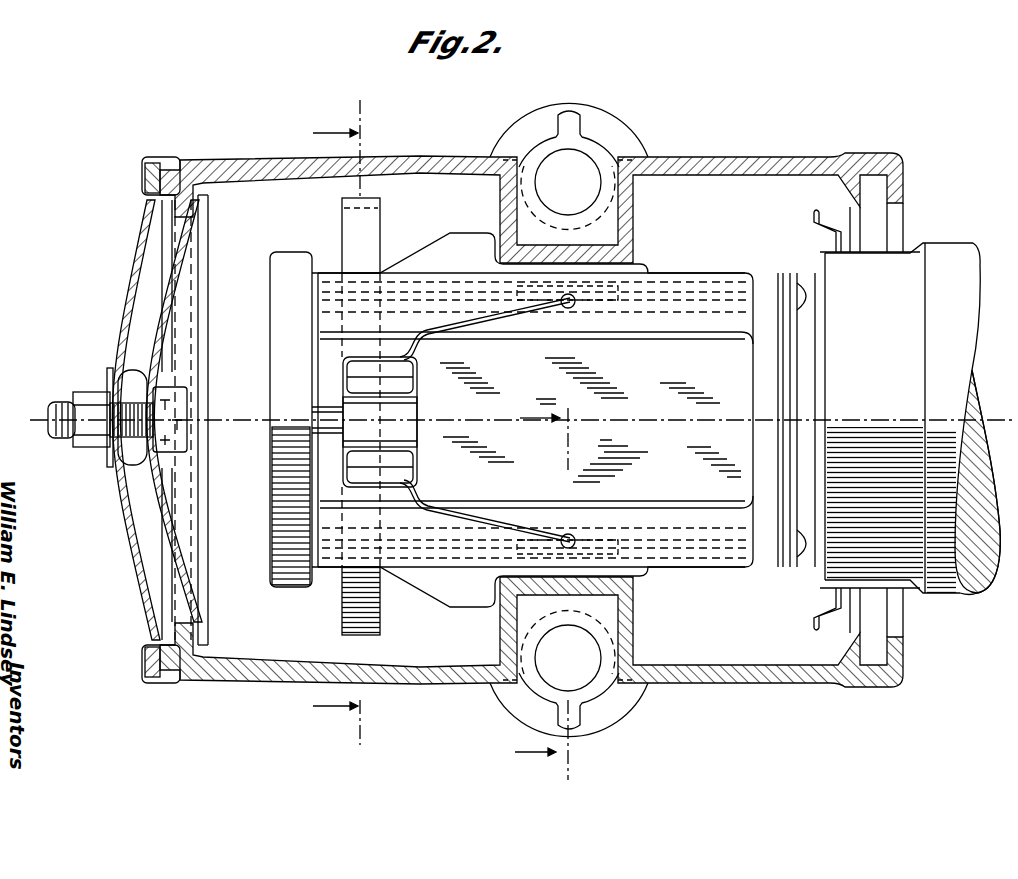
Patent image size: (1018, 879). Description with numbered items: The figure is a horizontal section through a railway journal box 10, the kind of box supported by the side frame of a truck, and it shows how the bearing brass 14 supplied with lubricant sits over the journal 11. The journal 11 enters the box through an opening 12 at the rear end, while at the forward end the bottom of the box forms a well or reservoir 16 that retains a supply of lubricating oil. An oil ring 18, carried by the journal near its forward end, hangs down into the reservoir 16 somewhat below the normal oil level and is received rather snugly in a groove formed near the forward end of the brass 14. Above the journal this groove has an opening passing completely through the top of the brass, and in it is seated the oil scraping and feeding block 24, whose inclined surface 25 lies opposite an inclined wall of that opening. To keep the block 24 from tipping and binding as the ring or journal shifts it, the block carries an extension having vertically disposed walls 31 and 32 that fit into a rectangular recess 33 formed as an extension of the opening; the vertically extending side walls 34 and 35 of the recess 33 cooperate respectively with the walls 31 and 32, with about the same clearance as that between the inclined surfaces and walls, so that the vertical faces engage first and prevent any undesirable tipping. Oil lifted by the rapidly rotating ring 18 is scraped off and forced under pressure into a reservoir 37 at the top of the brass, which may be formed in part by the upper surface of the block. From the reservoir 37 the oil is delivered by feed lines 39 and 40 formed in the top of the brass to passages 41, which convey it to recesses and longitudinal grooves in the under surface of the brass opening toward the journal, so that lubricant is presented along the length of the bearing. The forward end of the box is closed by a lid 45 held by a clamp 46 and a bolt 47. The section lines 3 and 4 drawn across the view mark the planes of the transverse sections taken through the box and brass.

The section line 3- 3 is at (336, 422).
The section line 4- 4 is at (541, 587).
The journal box 10 is at (697, 167).
The journal 11 is at (288, 388).
The opening 12 is at (893, 220).
The brass 14 is at (327, 348).
The well or reservoir 16 is at (233, 645).
The oil ring 18 is at (342, 216).
The oil scraping and feeding block 24 is at (352, 436).
The inclined surface 25 is at (348, 402).
The vertically disposed wall 31 is at (397, 415).
The vertically disposed wall 32 is at (384, 450).
The rectangular recess 33 is at (392, 396).
The side wall 34 is at (387, 393).
The side wall 35 is at (390, 455).
The reservoir 37 is at (363, 373).
The feed line 39 is at (457, 327).
The feed line 40 is at (443, 517).
The passage 41 is at (573, 307).
The lid 45 is at (128, 296).
The clamp 46 is at (203, 473).
The bolt 47 is at (52, 425).